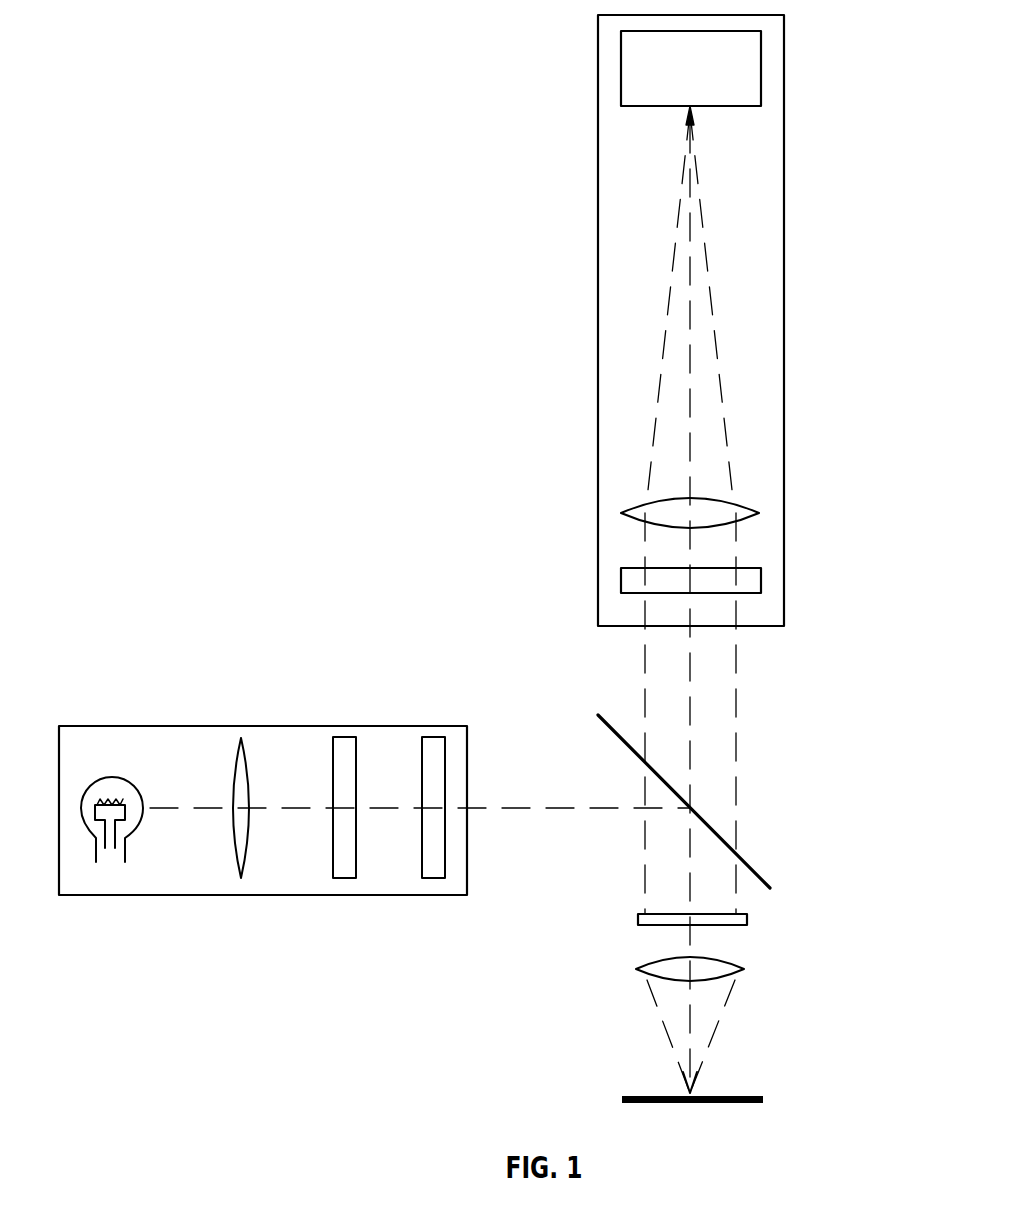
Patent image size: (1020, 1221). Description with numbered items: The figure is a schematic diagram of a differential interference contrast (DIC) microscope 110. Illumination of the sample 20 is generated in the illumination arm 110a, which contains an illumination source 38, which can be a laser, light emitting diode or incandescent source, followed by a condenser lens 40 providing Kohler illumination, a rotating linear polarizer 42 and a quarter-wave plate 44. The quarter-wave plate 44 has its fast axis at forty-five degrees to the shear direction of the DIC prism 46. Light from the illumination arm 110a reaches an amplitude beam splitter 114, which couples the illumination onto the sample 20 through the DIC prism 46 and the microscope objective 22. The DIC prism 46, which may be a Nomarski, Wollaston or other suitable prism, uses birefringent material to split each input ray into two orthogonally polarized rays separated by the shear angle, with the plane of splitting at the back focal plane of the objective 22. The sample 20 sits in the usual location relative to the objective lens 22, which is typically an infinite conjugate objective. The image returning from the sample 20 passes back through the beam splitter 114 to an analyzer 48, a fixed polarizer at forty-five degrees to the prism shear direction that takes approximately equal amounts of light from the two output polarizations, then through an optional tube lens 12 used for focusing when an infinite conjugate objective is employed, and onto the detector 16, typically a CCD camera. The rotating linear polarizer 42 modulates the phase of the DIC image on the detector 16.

The DIC microscope 110 is at (565, 365).
The illumination arm 110a is at (295, 895).
The detector 16 is at (761, 88).
The tube lens 12 is at (759, 513).
The analyzer 48 is at (761, 581).
The amplitude beam splitter 114 is at (757, 866).
The DIC prism 46 is at (762, 920).
The microscope objective 22 is at (744, 969).
The sample 20 is at (763, 1096).
The illumination source 38 is at (114, 777).
The condenser lens 40 is at (241, 738).
The rotating linear polarizer 42 is at (345, 737).
The quarter-wave plate 44 is at (432, 737).